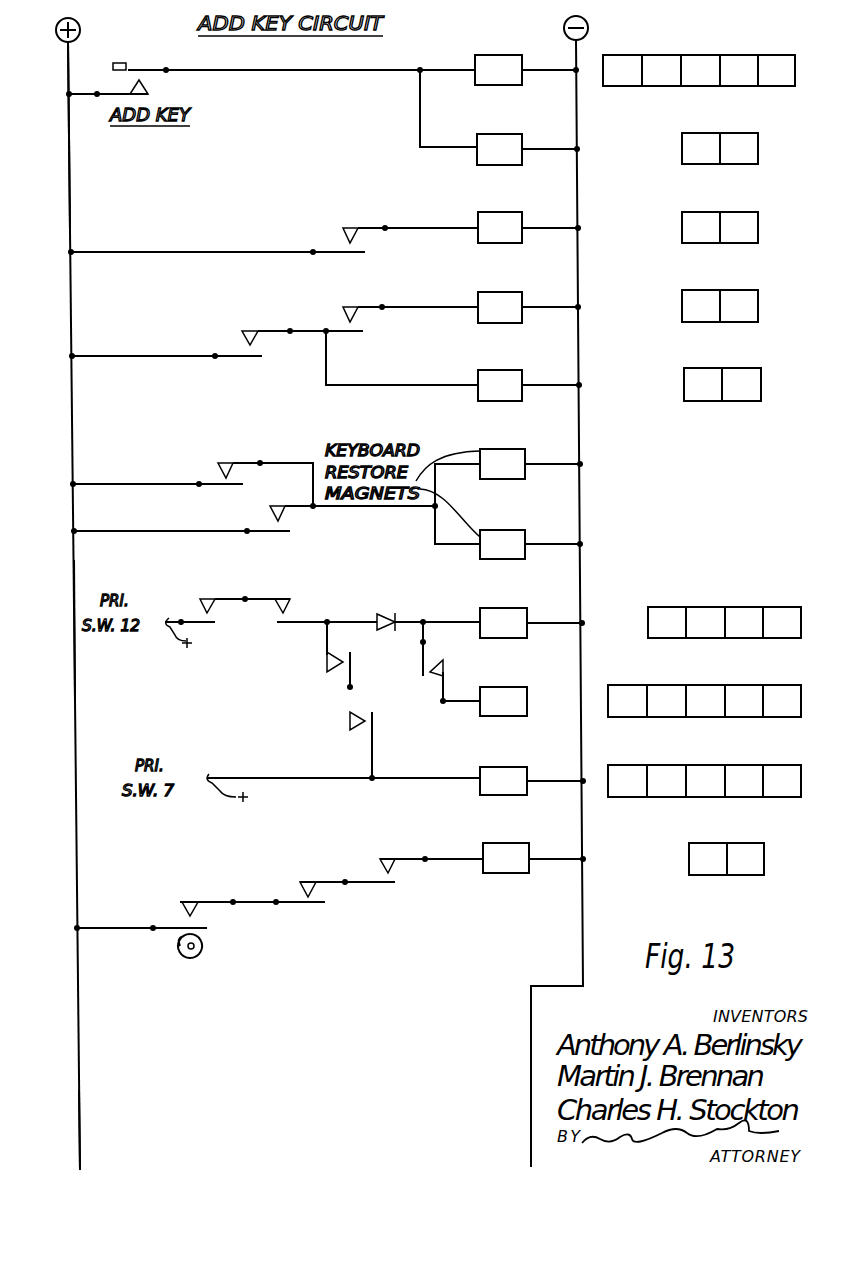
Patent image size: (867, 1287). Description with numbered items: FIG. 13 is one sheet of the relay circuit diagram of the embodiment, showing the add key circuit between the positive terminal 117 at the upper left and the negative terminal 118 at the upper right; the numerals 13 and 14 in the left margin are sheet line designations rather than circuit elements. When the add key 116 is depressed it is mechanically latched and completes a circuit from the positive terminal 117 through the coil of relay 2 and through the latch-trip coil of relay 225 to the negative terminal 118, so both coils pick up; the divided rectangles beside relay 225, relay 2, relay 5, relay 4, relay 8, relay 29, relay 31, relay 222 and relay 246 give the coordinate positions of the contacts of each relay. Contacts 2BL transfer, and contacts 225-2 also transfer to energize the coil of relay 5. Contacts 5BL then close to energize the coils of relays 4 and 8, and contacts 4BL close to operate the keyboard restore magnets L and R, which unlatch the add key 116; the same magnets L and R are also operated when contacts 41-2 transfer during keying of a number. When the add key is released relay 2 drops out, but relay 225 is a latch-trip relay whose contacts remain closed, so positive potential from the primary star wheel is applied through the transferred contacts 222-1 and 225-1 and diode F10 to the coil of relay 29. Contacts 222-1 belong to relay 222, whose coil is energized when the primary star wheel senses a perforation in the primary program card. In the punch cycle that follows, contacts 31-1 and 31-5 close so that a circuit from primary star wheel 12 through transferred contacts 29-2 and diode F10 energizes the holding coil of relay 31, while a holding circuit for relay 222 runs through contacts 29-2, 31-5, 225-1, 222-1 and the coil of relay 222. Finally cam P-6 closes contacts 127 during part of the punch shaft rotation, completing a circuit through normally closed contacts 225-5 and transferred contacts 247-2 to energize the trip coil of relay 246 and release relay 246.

The positive terminal 117 is at (80, 36).
The negative terminal 118 is at (564, 30).
The add key 116 is at (124, 80).
The latch-trip relay 225 is at (635, 69).
The relay 2 is at (617, 148).
The relay 5 is at (618, 227).
The relay 4 is at (618, 306).
The relay 8 is at (619, 385).
The keyboard restore magnet L is at (502, 464).
The keyboard restore magnet R is at (502, 544).
The relay 29 is at (640, 622).
The relay 31 is at (640, 699).
The relay 222 is at (640, 779).
The relay 246 is at (623, 857).
The relay contacts 225-2 is at (360, 246).
The relay contacts 2BL is at (360, 325).
The relay contacts 5BL is at (244, 340).
The relay contacts 41-2 is at (216, 472).
The relay contacts 4BL is at (290, 526).
The relay contacts 29-2 is at (212, 617).
The relay contacts 31-5 is at (293, 611).
The diode F10 is at (397, 612).
The relay contacts 225-1 is at (345, 678).
The relay contacts 31-1 is at (430, 675).
The relay contacts 222-1 is at (373, 742).
The relay contacts 247-2 is at (397, 876).
The relay contacts 225-5 is at (320, 900).
The cam contacts 127 is at (210, 925).
The cam P-6 is at (189, 962).
The primary star wheel 12 is at (51, 136).
The circuit line 13 is at (53, 630).
The circuit line 14 is at (57, 1130).